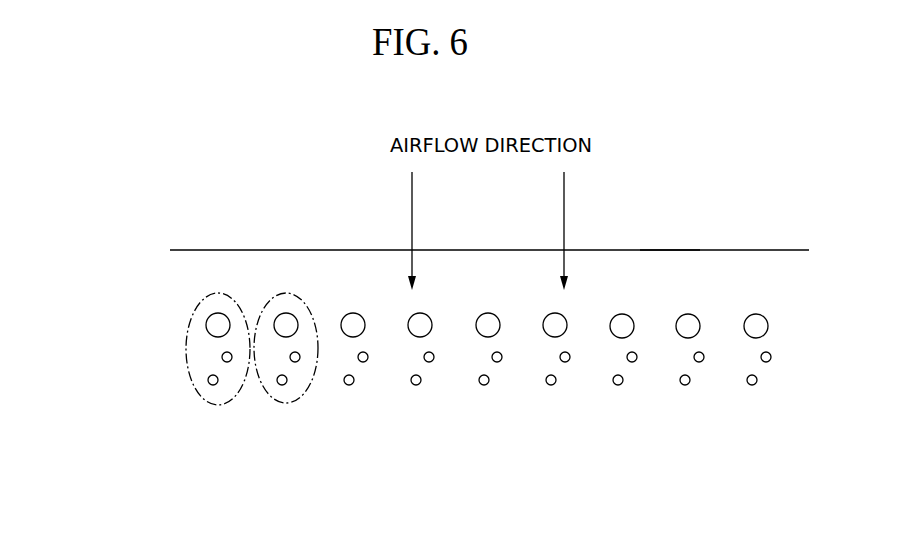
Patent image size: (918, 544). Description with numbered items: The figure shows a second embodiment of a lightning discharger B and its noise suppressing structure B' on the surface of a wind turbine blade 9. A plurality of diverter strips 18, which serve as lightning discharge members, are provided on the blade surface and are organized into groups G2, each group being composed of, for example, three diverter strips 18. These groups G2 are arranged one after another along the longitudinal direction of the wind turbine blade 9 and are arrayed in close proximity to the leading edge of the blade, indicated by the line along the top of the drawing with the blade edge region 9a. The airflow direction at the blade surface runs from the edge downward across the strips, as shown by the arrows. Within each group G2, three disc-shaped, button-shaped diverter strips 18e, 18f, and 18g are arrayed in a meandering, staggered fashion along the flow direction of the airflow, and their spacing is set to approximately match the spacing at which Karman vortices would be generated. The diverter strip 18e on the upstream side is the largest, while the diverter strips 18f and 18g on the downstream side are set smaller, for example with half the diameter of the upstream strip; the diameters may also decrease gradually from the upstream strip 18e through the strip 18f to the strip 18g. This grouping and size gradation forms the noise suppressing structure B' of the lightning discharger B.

The wind turbine blade 9 is at (259, 242).
The plate edge (leading edge) 9a is at (670, 250).
The diverter strip 18 is at (446, 348).
The diverter strip 18e is at (219, 322).
The diverter strip 18f is at (228, 358).
The diverter strip 18g is at (212, 380).
The group G2 is at (214, 418).
The lightning discharger B is at (140, 146).
The noise suppressing structure B' is at (106, 338).